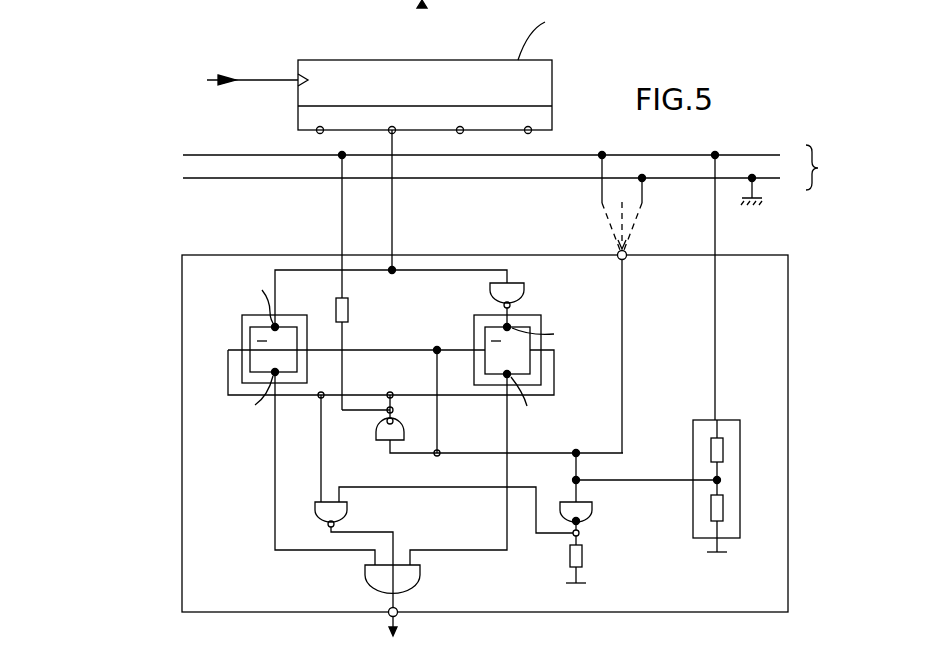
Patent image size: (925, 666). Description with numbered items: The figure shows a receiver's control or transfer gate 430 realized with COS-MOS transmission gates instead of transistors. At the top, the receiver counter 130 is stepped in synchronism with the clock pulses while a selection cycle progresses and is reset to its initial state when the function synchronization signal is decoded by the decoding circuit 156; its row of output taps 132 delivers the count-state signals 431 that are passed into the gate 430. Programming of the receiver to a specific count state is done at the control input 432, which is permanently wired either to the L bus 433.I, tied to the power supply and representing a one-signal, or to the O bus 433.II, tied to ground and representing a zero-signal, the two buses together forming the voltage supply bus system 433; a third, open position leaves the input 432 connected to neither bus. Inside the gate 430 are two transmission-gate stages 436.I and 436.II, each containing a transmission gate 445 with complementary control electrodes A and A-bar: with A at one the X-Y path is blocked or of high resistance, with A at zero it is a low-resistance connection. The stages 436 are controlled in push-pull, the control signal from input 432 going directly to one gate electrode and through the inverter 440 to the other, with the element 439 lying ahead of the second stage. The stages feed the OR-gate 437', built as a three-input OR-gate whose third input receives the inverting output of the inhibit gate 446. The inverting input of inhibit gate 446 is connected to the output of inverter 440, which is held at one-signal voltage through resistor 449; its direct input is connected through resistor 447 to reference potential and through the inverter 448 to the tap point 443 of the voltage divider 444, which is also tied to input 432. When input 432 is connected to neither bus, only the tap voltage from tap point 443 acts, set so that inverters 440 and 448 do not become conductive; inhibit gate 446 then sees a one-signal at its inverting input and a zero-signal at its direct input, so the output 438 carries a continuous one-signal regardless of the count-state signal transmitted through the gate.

The receiver counter 130 is at (306, 65).
The counter output stage 132 is at (298, 123).
The decoding circuit 156 is at (231, 80).
The output signal 431 is at (428, 17).
The signal 436 is at (476, 6).
The L bus 433.I is at (638, 156).
The O bus 433.II is at (460, 180).
The voltage supply bus system 433 is at (824, 168).
The control input 432 is at (627, 259).
The control gate 430 is at (775, 598).
The first flip-flop stage 436.I is at (245, 322).
The second flip-flop stage 436.II is at (537, 320).
The transmission gate 445 is at (283, 338).
The resistor 449 is at (349, 310).
The inverter gate 439 is at (521, 293).
The inverter 440 is at (377, 432).
The inhibit gate 446 is at (347, 508).
The OR-gate 437' is at (391, 489).
The output 438 is at (398, 616).
The tap point 443 is at (720, 480).
The voltage divider 444 is at (733, 530).
The inverter 448 is at (592, 511).
The resistor 447 is at (582, 556).